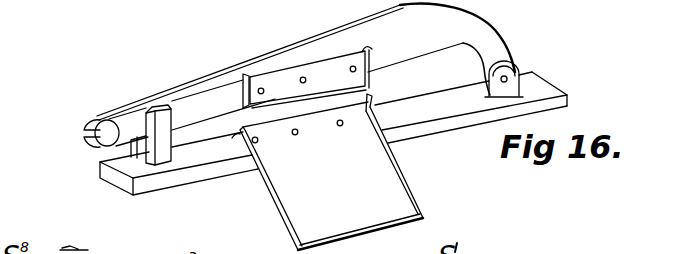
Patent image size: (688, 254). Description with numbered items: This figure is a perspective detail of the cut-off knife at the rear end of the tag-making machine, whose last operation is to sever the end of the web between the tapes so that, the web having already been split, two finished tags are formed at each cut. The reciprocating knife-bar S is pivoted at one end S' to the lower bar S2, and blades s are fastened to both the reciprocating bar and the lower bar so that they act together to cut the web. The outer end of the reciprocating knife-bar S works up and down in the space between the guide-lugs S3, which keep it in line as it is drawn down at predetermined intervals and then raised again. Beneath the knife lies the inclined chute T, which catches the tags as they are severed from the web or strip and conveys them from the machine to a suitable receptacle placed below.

The reciprocating knife-bar S is at (299, 73).
The pivot S' is at (537, 58).
The lower bar S2 is at (107, 172).
The guide-lugs S3 is at (163, 152).
The blades s is at (238, 139).
The inclined chute T is at (390, 182).